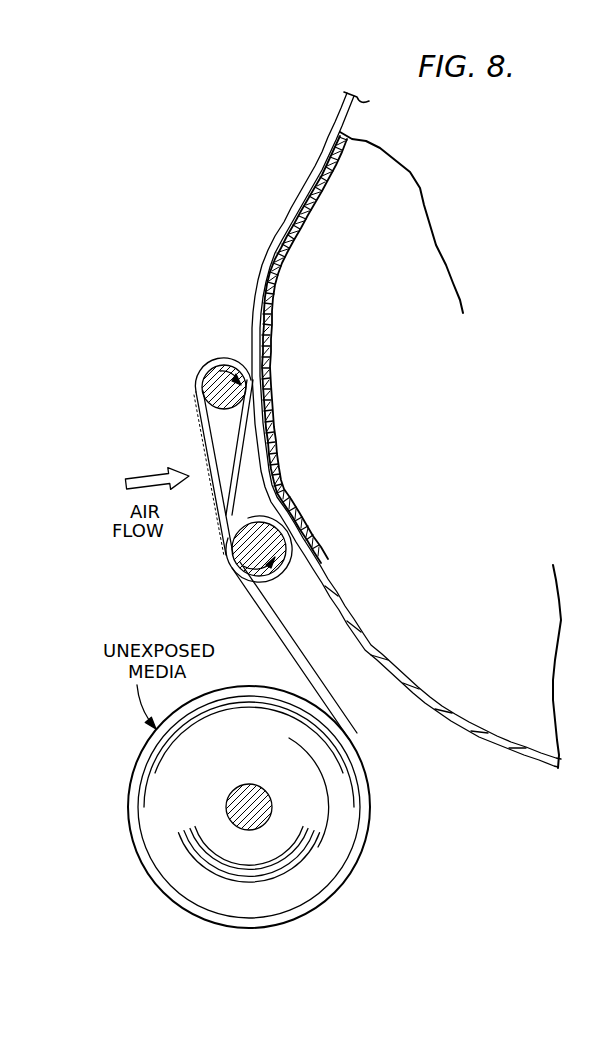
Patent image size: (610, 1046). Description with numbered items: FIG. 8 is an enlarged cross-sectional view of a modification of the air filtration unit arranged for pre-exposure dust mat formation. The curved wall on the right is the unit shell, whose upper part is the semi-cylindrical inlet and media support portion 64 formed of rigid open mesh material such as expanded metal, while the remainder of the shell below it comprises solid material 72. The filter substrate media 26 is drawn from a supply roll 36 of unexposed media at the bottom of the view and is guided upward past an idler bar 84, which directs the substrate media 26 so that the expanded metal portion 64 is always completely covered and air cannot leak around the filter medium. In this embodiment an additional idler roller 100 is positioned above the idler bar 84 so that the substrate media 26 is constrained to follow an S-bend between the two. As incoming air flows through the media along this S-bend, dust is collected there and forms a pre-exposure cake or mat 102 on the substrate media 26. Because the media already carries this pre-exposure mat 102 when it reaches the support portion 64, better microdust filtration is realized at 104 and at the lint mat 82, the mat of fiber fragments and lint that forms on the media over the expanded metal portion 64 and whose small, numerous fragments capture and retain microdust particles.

The semi-cylindrical inlet and media support portion 64 is at (272, 292).
The lint mat 82 is at (297, 180).
The solid material 72 is at (356, 619).
The additional idler roller 100 is at (218, 380).
The pre-exposure cake or mat 102 is at (198, 436).
The microdust filtration location 104 is at (267, 515).
The idler bar 84 is at (273, 533).
The filter substrate media 26 is at (250, 608).
The unexposed media roll 36 is at (360, 857).